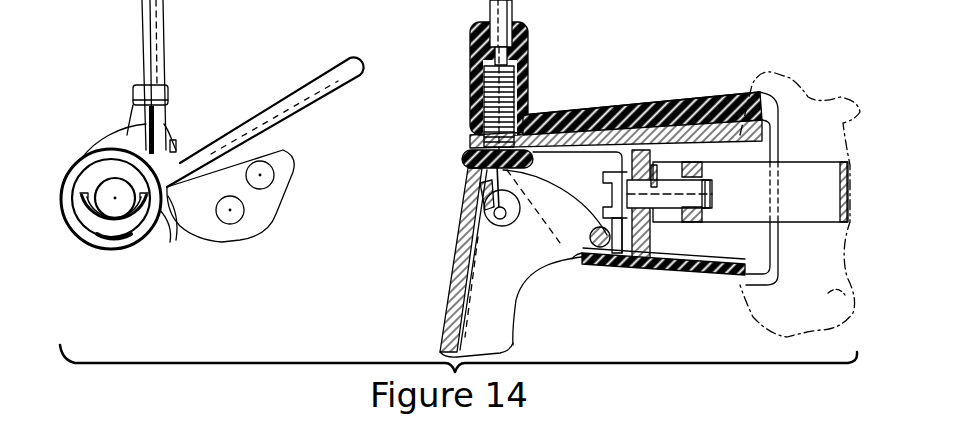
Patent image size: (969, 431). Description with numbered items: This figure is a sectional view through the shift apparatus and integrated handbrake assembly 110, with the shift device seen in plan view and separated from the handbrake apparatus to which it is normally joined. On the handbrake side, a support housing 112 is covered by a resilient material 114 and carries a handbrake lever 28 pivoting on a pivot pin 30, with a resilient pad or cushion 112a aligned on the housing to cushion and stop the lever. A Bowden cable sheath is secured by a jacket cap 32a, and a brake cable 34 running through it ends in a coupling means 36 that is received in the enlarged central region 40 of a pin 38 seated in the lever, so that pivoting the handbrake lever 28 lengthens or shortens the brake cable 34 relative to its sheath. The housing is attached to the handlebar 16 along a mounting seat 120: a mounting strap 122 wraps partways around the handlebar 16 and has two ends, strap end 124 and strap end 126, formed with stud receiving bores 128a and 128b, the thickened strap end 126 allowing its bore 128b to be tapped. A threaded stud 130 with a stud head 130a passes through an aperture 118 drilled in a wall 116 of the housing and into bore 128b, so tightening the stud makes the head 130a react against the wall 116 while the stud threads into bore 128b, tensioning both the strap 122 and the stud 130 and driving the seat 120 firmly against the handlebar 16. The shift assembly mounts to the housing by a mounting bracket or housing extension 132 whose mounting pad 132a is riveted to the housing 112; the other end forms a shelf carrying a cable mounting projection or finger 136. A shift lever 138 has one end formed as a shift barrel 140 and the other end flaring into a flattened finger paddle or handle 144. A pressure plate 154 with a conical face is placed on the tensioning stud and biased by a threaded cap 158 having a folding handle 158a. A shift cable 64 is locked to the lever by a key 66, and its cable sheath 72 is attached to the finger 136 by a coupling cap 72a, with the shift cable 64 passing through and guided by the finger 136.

The shift apparatus and integrated handbrake assembly 110 is at (82, 74).
The cable mounting projection or finger 136 is at (133, 105).
The shift cable 64 is at (128, 135).
The pressure plate 154 is at (92, 173).
The shift barrel 140 is at (108, 199).
The threaded cap 158 is at (97, 198).
The folding handle 158a is at (121, 236).
The key 66 is at (172, 218).
The mounting bracket or housing extension 132 is at (186, 213).
The mounting pad 132a is at (265, 207).
The cable sheath 72 is at (158, 37).
The coupling cap 72a is at (165, 90).
The shift lever 138 is at (180, 148).
The finger paddle or handle 144 is at (313, 83).
The jacket cap 32a is at (523, 72).
The resilient pad or cushion 112a is at (467, 160).
The resilient material 114 is at (563, 133).
The support housing 112 is at (587, 123).
The wall 116 is at (628, 135).
The stud receiving bore 128a is at (658, 175).
The stud receiving bore 128b is at (690, 163).
The mounting seat 120 is at (757, 102).
The handlebar 16 is at (752, 85).
The mounting strap 122 is at (807, 180).
The brake cable 34 is at (488, 173).
The pin 38 is at (492, 197).
The coupling means 36 is at (497, 217).
The handbrake lever 28 is at (458, 275).
The enlarged central region 40 is at (517, 212).
The pivot pin 30 is at (588, 243).
The stud head 130a is at (625, 275).
The aperture 118 is at (642, 257).
The strap end 124 is at (668, 262).
The strap end 126 is at (702, 250).
The threaded stud 130 is at (723, 192).